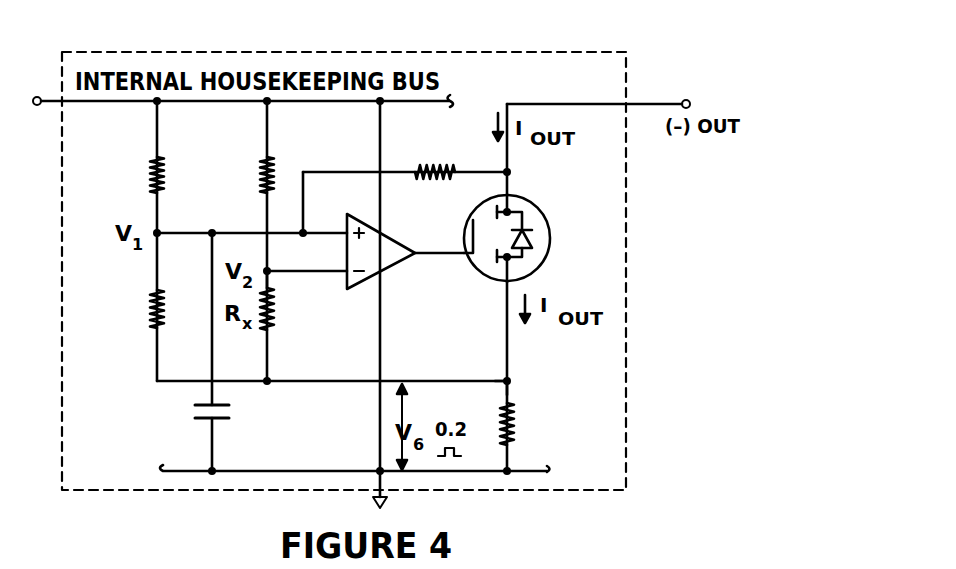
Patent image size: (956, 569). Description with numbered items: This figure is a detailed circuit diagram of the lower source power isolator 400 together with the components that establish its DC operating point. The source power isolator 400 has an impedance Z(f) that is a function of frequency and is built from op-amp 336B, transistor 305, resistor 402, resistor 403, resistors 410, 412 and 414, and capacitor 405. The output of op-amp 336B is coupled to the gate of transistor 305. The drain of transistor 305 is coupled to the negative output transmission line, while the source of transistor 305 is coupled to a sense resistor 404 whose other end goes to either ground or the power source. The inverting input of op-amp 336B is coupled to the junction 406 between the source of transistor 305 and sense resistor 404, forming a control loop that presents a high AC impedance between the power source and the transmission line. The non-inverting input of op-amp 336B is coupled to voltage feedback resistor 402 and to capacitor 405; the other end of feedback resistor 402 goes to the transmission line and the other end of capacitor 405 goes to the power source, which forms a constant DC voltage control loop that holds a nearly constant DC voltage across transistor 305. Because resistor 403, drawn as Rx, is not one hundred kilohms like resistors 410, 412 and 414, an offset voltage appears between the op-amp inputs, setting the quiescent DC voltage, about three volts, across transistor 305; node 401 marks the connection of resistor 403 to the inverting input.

The source power isolator 400 is at (538, 52).
The 100K resistor 414 is at (162, 157).
The resistor 410 is at (272, 157).
The resistor 412 is at (186, 284).
The V2 node connection 401 is at (270, 279).
The resistor 403 is at (270, 328).
The voltage feedback resistor 402 is at (432, 182).
The op-amp 336B is at (393, 268).
The transistor 305 is at (575, 207).
The junction 406 is at (509, 380).
The sense resistor 404 is at (512, 405).
The capacitor 405 is at (248, 434).